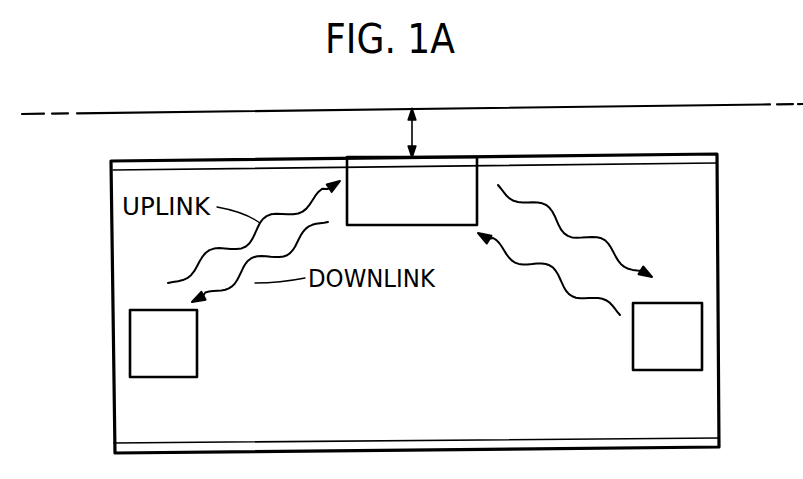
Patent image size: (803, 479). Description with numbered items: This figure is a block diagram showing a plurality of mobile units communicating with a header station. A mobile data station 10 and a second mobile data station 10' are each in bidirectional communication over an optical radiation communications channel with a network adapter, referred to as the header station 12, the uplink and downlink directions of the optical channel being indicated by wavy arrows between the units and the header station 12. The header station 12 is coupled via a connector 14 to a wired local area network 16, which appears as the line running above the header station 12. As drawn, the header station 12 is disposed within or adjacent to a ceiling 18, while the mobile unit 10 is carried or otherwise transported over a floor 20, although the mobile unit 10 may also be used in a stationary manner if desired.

The mobile data station 10 is at (624, 362).
The mobile data station 10' is at (196, 343).
The header station 12 is at (457, 155).
The connector 14 is at (410, 143).
The wired local area network 16 is at (348, 110).
The ceiling 18 is at (688, 154).
The floor 20 is at (373, 441).